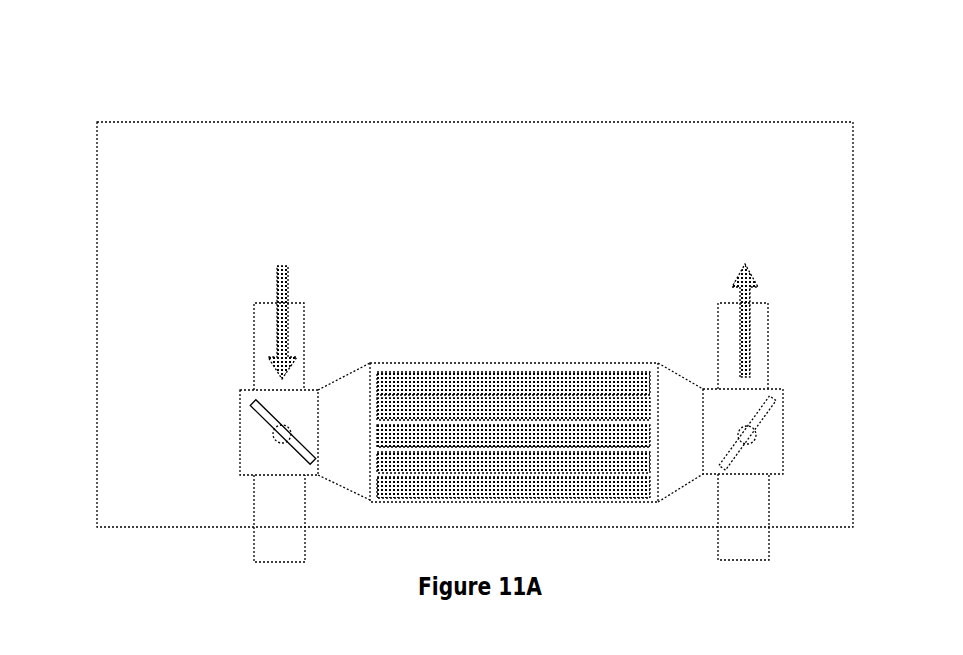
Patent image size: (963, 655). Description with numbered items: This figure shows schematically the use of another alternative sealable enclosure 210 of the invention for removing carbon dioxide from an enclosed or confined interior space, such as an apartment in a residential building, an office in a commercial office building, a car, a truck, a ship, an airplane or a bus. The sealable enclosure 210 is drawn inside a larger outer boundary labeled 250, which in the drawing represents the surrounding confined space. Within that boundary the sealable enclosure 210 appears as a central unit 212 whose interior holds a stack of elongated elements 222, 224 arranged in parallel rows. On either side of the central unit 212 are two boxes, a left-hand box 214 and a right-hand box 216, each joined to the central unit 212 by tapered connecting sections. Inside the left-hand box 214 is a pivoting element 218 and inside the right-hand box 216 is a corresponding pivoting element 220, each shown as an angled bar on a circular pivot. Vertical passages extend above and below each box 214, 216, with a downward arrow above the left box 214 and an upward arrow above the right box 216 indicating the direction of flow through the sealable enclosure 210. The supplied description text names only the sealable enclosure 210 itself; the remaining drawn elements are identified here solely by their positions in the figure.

The enclosure / housing 250 is at (509, 167).
The sealable enclosure 210 is at (477, 432).
The heat exchanger core 212 is at (495, 438).
The inlet damper box 214 is at (195, 342).
The outlet damper box 216 is at (818, 379).
The inlet damper blade 218 is at (284, 430).
The outlet damper blade 220 is at (755, 426).
The heat exchange plates 222 is at (513, 360).
The flow channels 224 is at (473, 380).